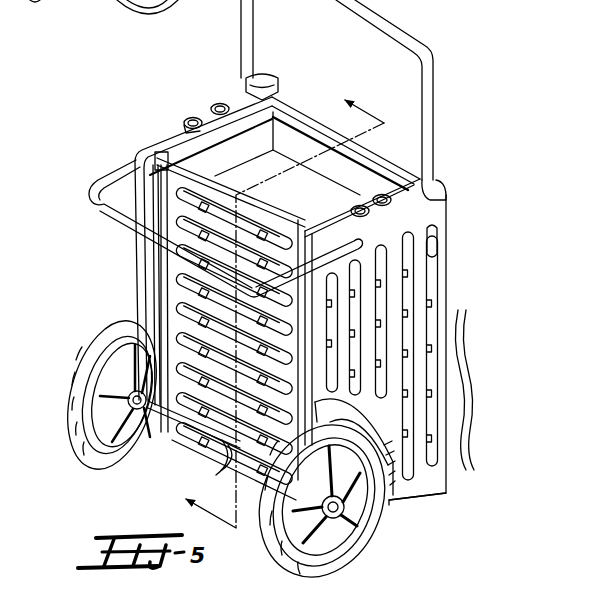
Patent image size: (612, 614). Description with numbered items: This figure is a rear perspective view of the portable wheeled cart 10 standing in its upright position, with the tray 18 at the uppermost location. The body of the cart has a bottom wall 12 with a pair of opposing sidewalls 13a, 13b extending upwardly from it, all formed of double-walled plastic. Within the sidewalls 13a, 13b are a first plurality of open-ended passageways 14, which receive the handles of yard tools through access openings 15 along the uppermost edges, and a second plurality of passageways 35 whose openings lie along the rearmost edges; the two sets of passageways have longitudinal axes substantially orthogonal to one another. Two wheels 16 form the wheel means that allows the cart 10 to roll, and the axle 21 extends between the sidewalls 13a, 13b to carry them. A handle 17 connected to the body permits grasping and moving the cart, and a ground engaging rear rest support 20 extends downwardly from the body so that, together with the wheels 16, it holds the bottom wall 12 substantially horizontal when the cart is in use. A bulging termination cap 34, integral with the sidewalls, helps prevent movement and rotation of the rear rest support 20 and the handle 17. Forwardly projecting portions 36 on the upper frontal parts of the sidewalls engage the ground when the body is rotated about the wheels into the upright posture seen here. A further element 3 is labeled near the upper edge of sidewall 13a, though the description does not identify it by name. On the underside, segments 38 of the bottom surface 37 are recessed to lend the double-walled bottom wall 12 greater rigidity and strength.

The hook 3 is at (445, 247).
The portable wheeled cart 10 is at (30, 331).
The bottom wall 12 is at (168, 268).
The sidewall 13a is at (452, 261).
The sidewall 13b is at (284, 72).
The open-ended passageways 14 is at (434, 283).
The access openings 15 is at (196, 119).
The wheels 16 is at (73, 420).
The handle 17 is at (434, 96).
The tray 18 is at (320, 182).
The rear rest support 20 is at (113, 213).
The axle 21 is at (191, 460).
The bulging termination cap 34 is at (303, 216).
The second plurality of passageways 35 is at (392, 278).
The forwardly projecting portions 36 is at (443, 497).
The bottom surface 37 is at (193, 297).
The recessed segments 38 is at (220, 455).